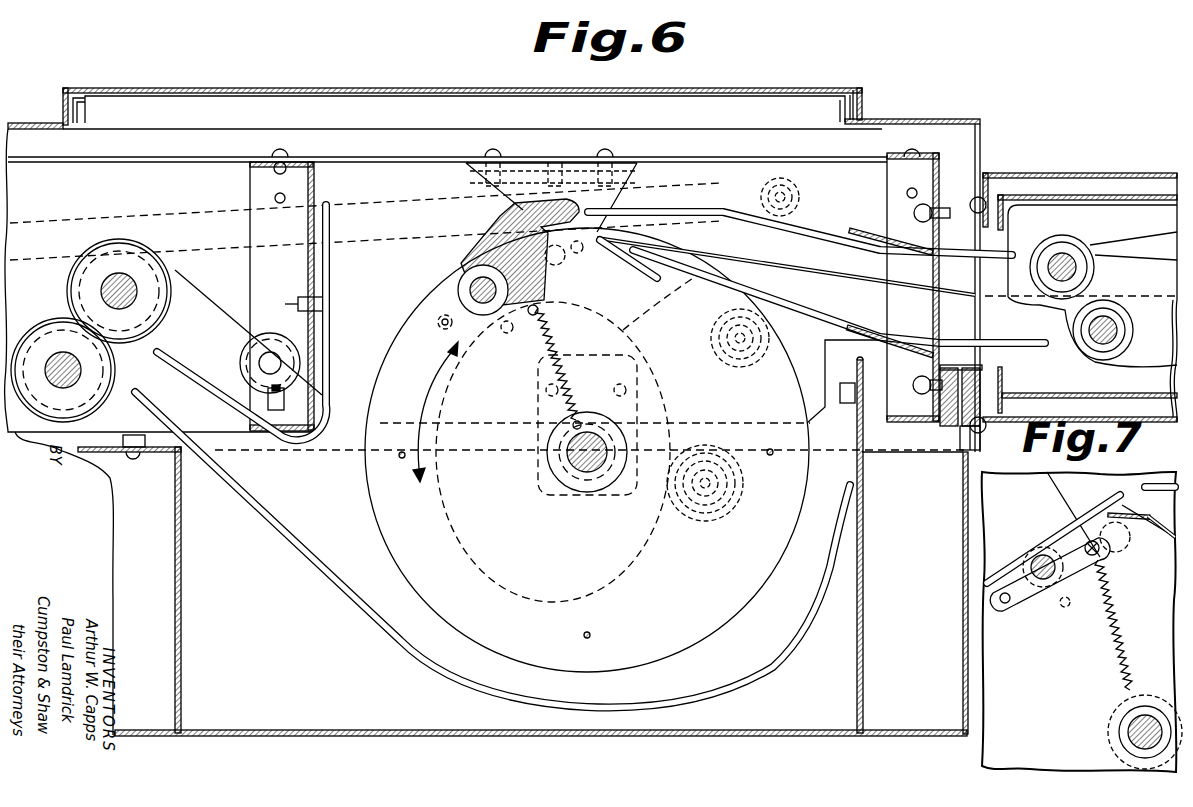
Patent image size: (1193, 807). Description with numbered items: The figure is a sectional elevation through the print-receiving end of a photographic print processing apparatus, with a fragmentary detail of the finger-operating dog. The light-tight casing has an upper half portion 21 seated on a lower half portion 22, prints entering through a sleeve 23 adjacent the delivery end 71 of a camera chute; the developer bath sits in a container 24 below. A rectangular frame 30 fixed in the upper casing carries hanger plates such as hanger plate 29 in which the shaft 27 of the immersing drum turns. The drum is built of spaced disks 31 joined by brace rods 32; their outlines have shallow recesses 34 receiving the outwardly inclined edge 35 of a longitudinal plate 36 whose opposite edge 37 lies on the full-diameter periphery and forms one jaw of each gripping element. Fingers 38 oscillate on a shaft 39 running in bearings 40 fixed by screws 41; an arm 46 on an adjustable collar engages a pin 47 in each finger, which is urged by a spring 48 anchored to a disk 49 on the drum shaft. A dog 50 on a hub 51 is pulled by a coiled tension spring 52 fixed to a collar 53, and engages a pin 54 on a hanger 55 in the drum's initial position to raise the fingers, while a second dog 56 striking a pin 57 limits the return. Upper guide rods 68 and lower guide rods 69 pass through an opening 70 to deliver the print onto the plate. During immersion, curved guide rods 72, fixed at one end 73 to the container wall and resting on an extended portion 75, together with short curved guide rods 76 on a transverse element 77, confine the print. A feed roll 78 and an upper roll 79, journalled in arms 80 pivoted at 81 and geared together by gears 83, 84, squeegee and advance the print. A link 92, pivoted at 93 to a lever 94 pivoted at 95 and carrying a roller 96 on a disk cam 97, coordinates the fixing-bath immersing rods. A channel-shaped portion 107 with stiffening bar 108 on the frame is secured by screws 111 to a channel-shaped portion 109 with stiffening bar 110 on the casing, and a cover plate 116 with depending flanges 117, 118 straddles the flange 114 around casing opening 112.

In FIG. 6, the upper half portion 21 is at (920, 120).
In FIG. 6, the lower half portion 22 is at (962, 495).
In FIG. 6, the sleeve 23 is at (1073, 174).
In FIG. 6, the container 24 is at (182, 565).
In FIG. 6, the shaft 27 is at (584, 470).
In FIG. 7, the shaft 27 is at (1140, 734).
In FIG. 6, the hanger plate 29 is at (638, 396).
In FIG. 6, the frame 30 is at (940, 186).
In FIG. 7, the frame 30 is at (1010, 482).
In FIG. 6, the disks 31 is at (392, 530).
In FIG. 6, the brace rods 32 is at (401, 460).
In FIG. 6, the recesses 34 is at (677, 288).
In FIG. 6, the outwardly inclined edge 35 is at (647, 276).
In FIG. 6, the longitudinal plate 36 is at (610, 248).
In FIG. 6, the plate edge 37 is at (587, 255).
In FIG. 7, the plate edge 37 is at (1022, 663).
In FIG. 6, the fingers 38 is at (540, 200).
In FIG. 6, the shaft 39 is at (460, 286).
In FIG. 7, the shaft 39 is at (1030, 562).
In FIG. 6, the bearings 40 is at (428, 345).
In FIG. 7, the bearings 40 is at (1010, 606).
In FIG. 6, the screws 41 is at (438, 318).
In FIG. 7, the screws 41 is at (1042, 592).
In FIG. 6, the arm 46 is at (556, 270).
In FIG. 6, the pin 47 is at (488, 240).
In FIG. 6, the spring 48 is at (560, 345).
In FIG. 6, the disk 49 is at (586, 400).
In FIG. 6, the dog 50 is at (586, 212).
In FIG. 7, the dog 50 is at (1098, 503).
In FIG. 7, the hub 51 is at (1035, 548).
In FIG. 7, the coiled tension spring 52 is at (1122, 622).
In FIG. 7, the collar 53 is at (1108, 712).
In FIG. 6, the pin 54 is at (570, 267).
In FIG. 7, the pin 54 is at (1132, 540).
In FIG. 6, the hanger 55 is at (640, 185).
In FIG. 7, the hanger 55 is at (1145, 480).
In FIG. 6, the dog 56 is at (531, 316).
In FIG. 7, the dog 56 is at (1092, 565).
In FIG. 6, the pin 57 is at (498, 337).
In FIG. 7, the pin 57 is at (1063, 608).
In FIG. 6, the upper guide rods 68 is at (822, 232).
In FIG. 6, the lower guide rods 69 is at (853, 322).
In FIG. 6, the opening 70 is at (981, 232).
In FIG. 6, the delivery end 71 is at (1050, 196).
In FIG. 6, the guide rods 72 is at (348, 585).
In FIG. 6, the end 73 is at (862, 392).
In FIG. 6, the extended portion 75 is at (147, 455).
In FIG. 6, the curved guide rods 76 is at (332, 424).
In FIG. 6, the transverse element 77 is at (316, 200).
In FIG. 6, the feed roll 78 is at (130, 376).
In FIG. 6, the roll 79 is at (175, 282).
In FIG. 6, the arms 80 is at (215, 304).
In FIG. 6, the pivot 81 is at (262, 360).
In FIG. 6, the gear 83 is at (55, 318).
In FIG. 6, the gear 84 is at (158, 257).
In FIG. 6, the link 92 is at (406, 204).
In FIG. 6, the pivot 93 is at (796, 192).
In FIG. 6, the lever 94 is at (810, 274).
In FIG. 6, the pivot 95 is at (737, 360).
In FIG. 6, the roller 96 is at (720, 517).
In FIG. 6, the disk cam 97 is at (530, 588).
In FIG. 6, the channel-shaped portion 107 is at (950, 363).
In FIG. 6, the stiffening and supporting bar 108 is at (946, 418).
In FIG. 6, the channel-shaped portion 109 is at (975, 363).
In FIG. 6, the stiffening and supporting bar 110 is at (985, 437).
In FIG. 6, the screws 111 is at (1002, 405).
In FIG. 6, the opening 112 is at (832, 113).
In FIG. 6, the flange 114 is at (862, 92).
In FIG. 6, the cover plate 116 is at (758, 88).
In FIG. 6, the depending flange 117 is at (856, 105).
In FIG. 6, the depending flange 118 is at (838, 101).